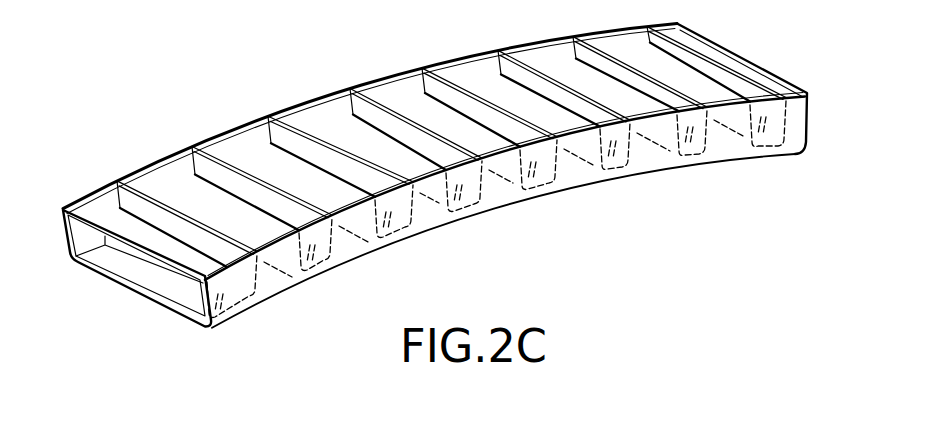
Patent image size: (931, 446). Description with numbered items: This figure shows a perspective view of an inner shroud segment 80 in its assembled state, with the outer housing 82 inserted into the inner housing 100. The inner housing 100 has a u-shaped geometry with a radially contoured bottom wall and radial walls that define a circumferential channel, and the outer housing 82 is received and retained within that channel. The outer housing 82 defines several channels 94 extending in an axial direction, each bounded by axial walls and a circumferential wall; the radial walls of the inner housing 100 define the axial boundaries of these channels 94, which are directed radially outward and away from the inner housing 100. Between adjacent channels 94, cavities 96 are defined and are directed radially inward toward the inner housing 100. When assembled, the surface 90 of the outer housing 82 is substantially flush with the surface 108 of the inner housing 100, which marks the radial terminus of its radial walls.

The inner shroud segment 80 is at (131, 91).
The outer housing 82 is at (88, 207).
The surface 90 is at (148, 181).
The channel 94 is at (352, 108).
The cavity 96 is at (505, 190).
The inner housing 100 is at (103, 268).
The surface 108 is at (203, 284).